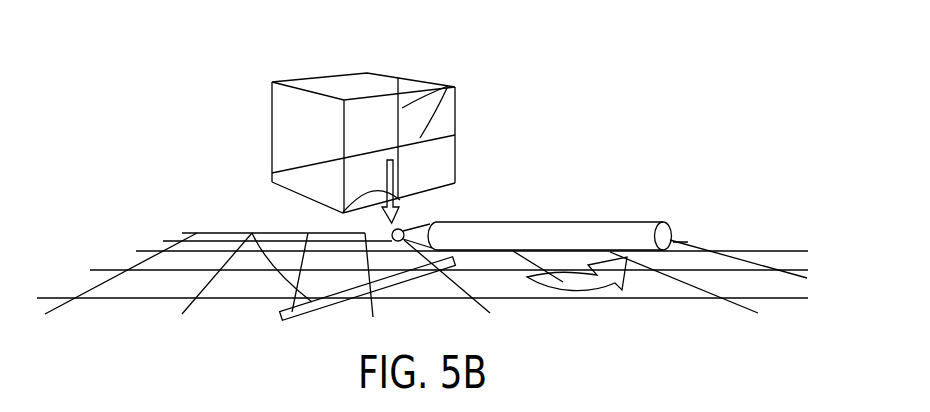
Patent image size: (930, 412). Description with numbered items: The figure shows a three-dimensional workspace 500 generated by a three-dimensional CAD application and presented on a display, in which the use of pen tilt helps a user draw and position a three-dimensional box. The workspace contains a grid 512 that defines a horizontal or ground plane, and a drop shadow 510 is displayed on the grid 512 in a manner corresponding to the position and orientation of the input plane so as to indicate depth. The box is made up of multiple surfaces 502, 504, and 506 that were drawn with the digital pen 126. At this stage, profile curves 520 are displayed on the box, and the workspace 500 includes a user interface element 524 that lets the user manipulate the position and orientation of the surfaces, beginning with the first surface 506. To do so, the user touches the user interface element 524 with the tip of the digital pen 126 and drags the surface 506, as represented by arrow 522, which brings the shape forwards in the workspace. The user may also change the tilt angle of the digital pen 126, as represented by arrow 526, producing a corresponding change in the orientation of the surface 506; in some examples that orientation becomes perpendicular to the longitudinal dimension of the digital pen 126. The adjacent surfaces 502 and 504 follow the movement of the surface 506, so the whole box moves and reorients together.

The 3D workspace 500 is at (234, 88).
The surface 502 is at (350, 87).
The surface 504 is at (288, 133).
The first surface 506 is at (440, 118).
The profile curves 520 is at (448, 85).
The arrow 522 is at (343, 209).
The user interface element 524 is at (404, 230).
The drop shadow 510 is at (252, 233).
The digital pen 126 is at (533, 221).
The grid 512 is at (748, 238).
The arrow 526 is at (600, 290).